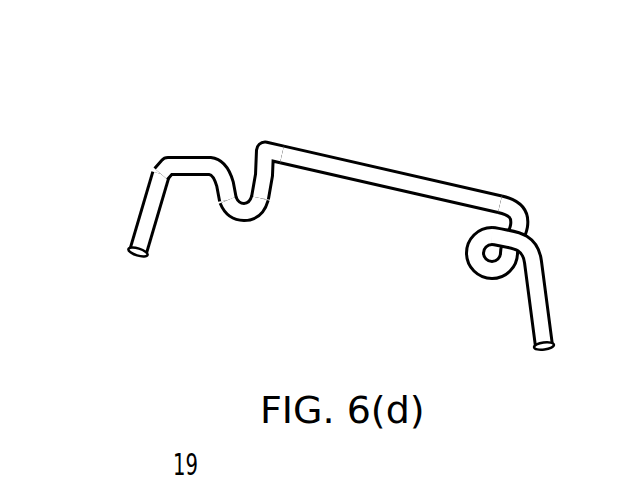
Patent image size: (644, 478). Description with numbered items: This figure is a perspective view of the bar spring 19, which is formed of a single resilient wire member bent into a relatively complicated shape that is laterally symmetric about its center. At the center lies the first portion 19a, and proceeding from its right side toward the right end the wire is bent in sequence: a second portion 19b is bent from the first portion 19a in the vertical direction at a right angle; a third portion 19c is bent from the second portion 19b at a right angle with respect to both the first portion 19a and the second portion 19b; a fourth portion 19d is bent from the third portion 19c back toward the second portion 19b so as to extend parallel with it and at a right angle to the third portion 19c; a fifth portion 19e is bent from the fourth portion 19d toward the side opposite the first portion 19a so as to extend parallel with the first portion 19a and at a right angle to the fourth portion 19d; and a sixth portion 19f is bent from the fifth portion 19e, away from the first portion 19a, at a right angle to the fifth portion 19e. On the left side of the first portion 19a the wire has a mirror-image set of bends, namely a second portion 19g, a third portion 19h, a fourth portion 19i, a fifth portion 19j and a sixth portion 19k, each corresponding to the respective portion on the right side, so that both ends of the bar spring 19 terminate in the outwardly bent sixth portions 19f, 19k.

The bar spring 19 is at (334, 196).
The first portion 19a is at (409, 183).
The second portion 19b is at (524, 222).
The third portion 19c is at (497, 277).
The fourth portion 19d is at (467, 269).
The fifth portion 19e is at (479, 237).
The sixth portion 19f is at (551, 331).
The second portion 19g is at (273, 182).
The third portion 19h is at (243, 210).
The fourth portion 19i is at (224, 212).
The fifth portion 19j is at (204, 168).
The sixth portion 19k is at (134, 234).